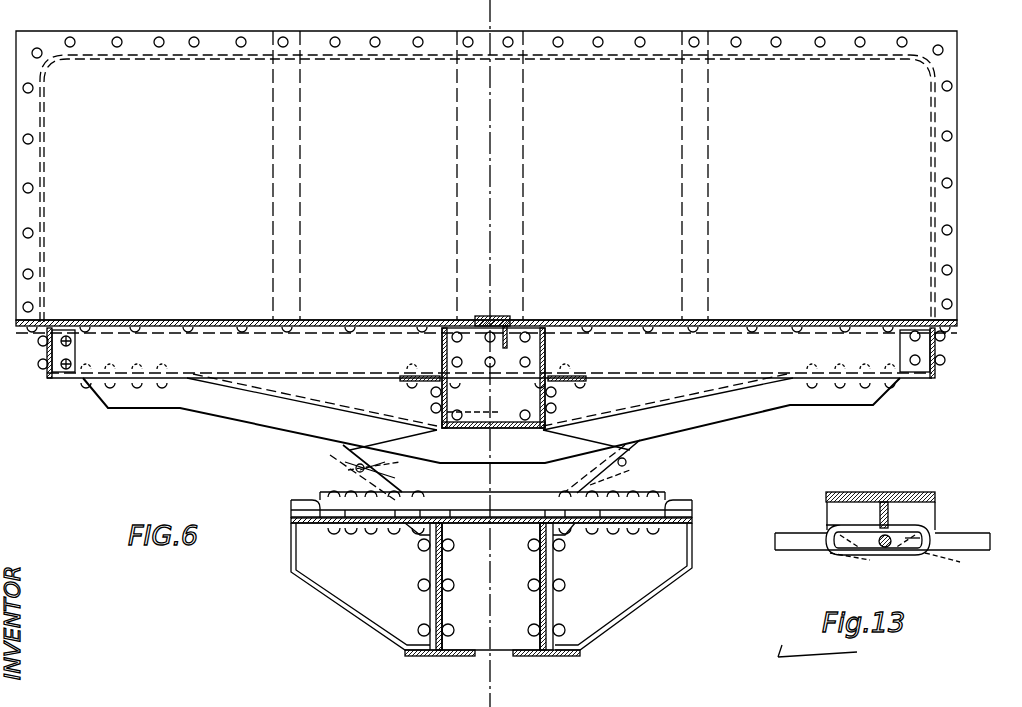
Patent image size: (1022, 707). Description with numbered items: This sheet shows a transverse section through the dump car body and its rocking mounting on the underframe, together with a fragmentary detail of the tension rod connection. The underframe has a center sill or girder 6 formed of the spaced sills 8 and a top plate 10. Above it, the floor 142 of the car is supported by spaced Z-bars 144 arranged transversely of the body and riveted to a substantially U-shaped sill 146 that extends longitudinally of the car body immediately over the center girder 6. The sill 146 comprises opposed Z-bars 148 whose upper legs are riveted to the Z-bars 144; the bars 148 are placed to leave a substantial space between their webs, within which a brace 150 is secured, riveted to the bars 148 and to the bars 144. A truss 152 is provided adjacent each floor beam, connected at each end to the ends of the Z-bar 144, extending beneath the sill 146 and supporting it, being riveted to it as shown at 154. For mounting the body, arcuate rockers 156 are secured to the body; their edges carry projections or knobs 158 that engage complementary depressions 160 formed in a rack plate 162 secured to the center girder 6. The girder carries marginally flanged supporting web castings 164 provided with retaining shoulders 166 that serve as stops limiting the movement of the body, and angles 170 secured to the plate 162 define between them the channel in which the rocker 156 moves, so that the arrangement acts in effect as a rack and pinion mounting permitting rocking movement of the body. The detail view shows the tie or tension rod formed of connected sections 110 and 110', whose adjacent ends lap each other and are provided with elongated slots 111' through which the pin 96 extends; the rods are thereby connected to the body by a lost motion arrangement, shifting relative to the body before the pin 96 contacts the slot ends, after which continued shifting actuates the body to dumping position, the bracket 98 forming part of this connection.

In FIG. 6, the center sill or girder 6 is at (491, 586).
In FIG. 6, the spaced sills 8 is at (430, 657).
In FIG. 6, the top plate 10 is at (510, 517).
In FIG. 13, the pin 96 is at (885, 548).
In FIG. 13, the bracket 98 is at (935, 496).
In FIG. 13, the tension rod section 110 is at (893, 544).
In FIG. 13, the tension rod section 110' is at (891, 543).
In FIG. 13, the elongated slots 111' is at (932, 566).
In FIG. 6, the floor 142 is at (350, 320).
In FIG. 6, the Z-bars 144 is at (486, 204).
In FIG. 6, the U-shaped sill 146 is at (418, 371).
In FIG. 6, the opposed Z-bars 148 is at (436, 400).
In FIG. 6, the brace 150 is at (455, 353).
In FIG. 6, the truss 152 is at (275, 422).
In FIG. 6, the rivets 154 is at (528, 419).
In FIG. 6, the rockers 156 is at (380, 470).
In FIG. 6, the projections or knobs 158 is at (630, 455).
In FIG. 6, the depressions 160 is at (418, 522).
In FIG. 6, the rack plate 162 is at (665, 499).
In FIG. 6, the supporting web castings 164 is at (348, 597).
In FIG. 6, the retaining shoulders 166 is at (290, 505).
In FIG. 6, the angles 170 is at (625, 476).